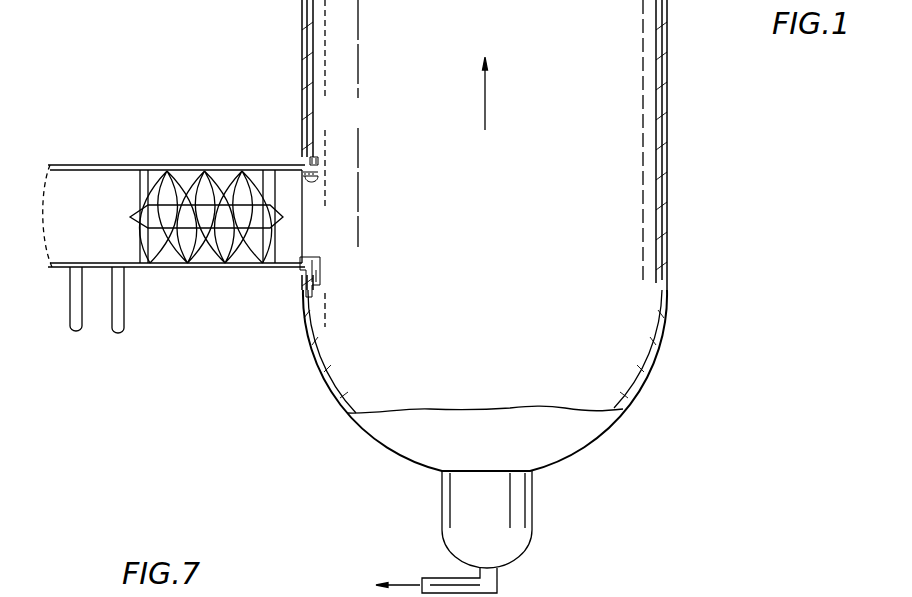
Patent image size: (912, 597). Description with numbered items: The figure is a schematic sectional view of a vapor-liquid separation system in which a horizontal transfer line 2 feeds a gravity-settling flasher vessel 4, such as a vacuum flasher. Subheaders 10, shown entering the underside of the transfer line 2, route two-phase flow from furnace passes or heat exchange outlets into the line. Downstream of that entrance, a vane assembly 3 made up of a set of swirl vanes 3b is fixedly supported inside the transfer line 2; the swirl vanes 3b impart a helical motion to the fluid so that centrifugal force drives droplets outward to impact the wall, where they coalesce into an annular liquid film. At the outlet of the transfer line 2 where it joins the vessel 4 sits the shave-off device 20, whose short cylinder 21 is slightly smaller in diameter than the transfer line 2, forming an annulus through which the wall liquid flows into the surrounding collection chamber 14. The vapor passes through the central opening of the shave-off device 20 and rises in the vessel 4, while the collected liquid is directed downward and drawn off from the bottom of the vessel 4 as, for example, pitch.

The transfer line 2 is at (80, 211).
The vane assembly 3 is at (189, 216).
The swirl vanes 3b is at (216, 264).
The flasher vessel 4 is at (486, 252).
The subheaders 10 is at (98, 345).
The collection chamber 14 is at (315, 163).
The shave-off device 20 is at (297, 282).
The short cylinder 21 is at (320, 185).